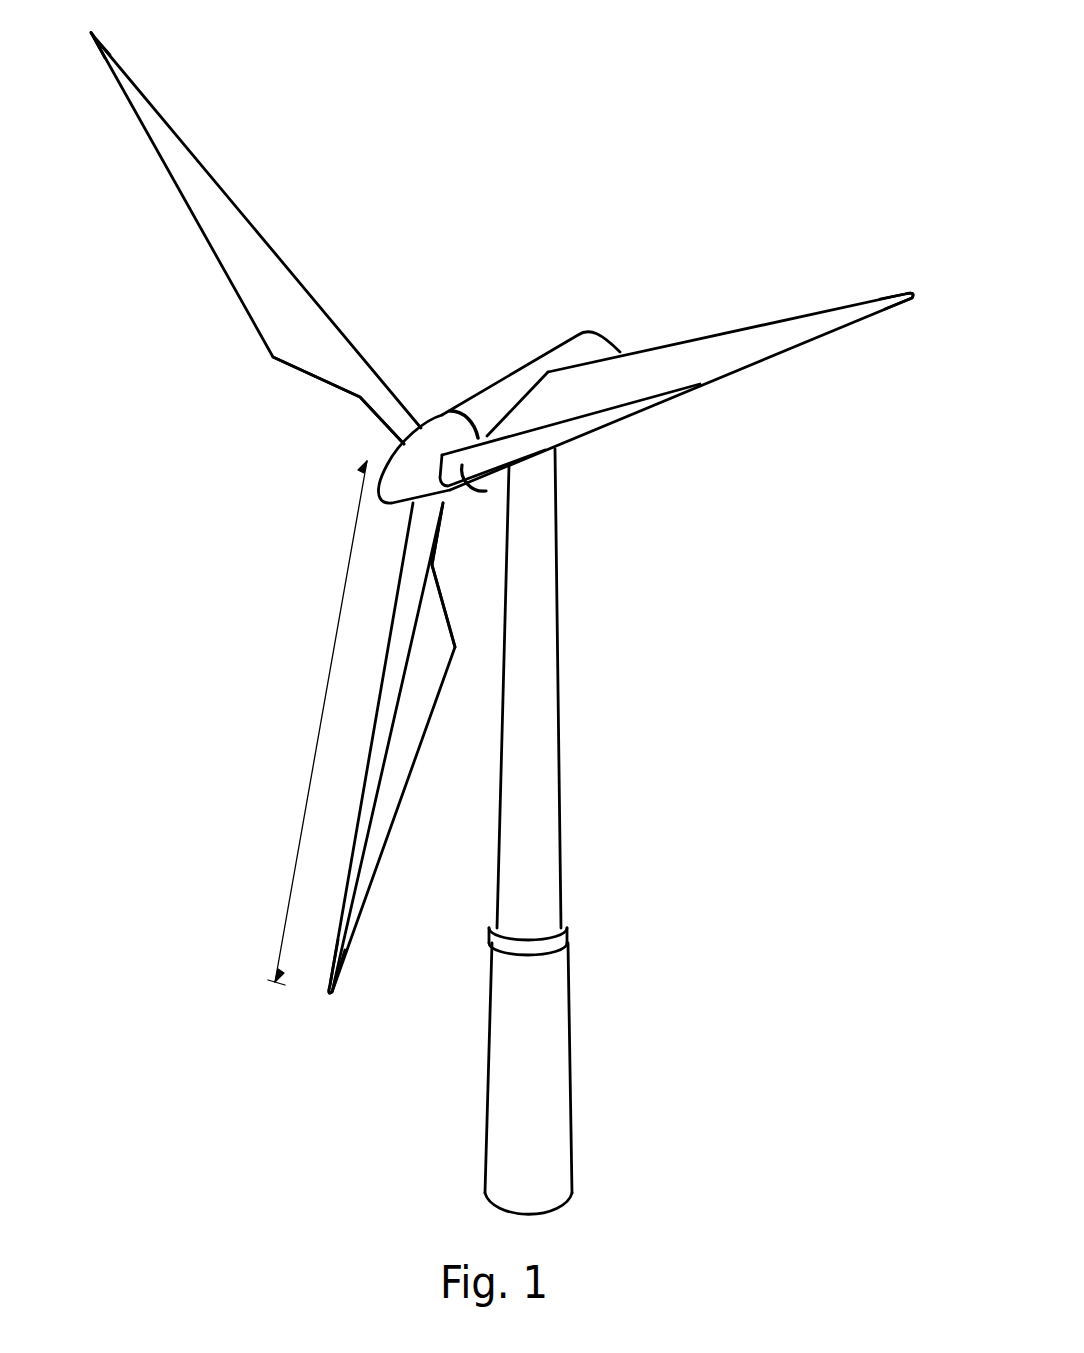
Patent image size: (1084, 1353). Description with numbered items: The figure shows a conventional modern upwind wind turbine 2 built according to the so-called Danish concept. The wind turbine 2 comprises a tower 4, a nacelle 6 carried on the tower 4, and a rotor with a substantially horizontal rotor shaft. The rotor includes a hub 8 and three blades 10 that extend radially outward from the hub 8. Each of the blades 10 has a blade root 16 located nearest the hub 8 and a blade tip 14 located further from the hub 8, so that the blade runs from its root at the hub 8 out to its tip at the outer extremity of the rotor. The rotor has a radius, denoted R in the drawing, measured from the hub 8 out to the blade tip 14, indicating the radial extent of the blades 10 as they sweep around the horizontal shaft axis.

The wind turbine 2 is at (502, 607).
The tower 4 is at (543, 687).
The nacelle 6 is at (515, 385).
The hub 8 is at (404, 462).
The blades 10 is at (255, 283).
The blade tip 14 is at (130, 88).
The blade root 16 is at (400, 417).